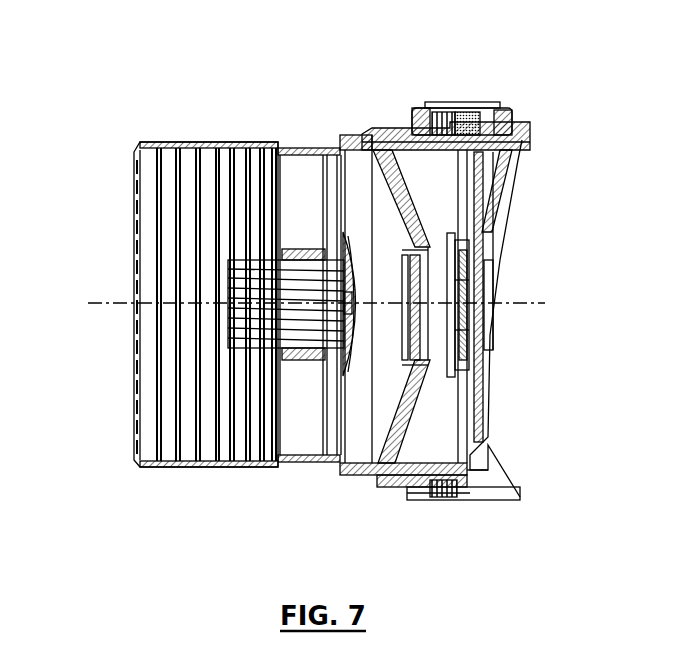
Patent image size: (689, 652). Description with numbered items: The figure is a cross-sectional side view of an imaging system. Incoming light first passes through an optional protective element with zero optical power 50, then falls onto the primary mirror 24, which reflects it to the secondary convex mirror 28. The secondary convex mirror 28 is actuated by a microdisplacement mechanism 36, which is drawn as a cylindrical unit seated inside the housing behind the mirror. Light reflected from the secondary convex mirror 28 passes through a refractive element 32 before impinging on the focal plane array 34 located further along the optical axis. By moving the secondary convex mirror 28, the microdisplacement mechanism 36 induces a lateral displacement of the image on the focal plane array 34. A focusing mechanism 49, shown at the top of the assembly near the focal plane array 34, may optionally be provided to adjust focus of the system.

The protective element with zero optical power 50 is at (134, 160).
The microdisplacement mechanism 36 is at (283, 275).
The secondary convex mirror 28 is at (348, 245).
The primary mirror 24 is at (386, 147).
The refractive element 32 is at (415, 265).
The focusing mechanism 49 is at (461, 110).
The focal plane array 34 is at (467, 246).